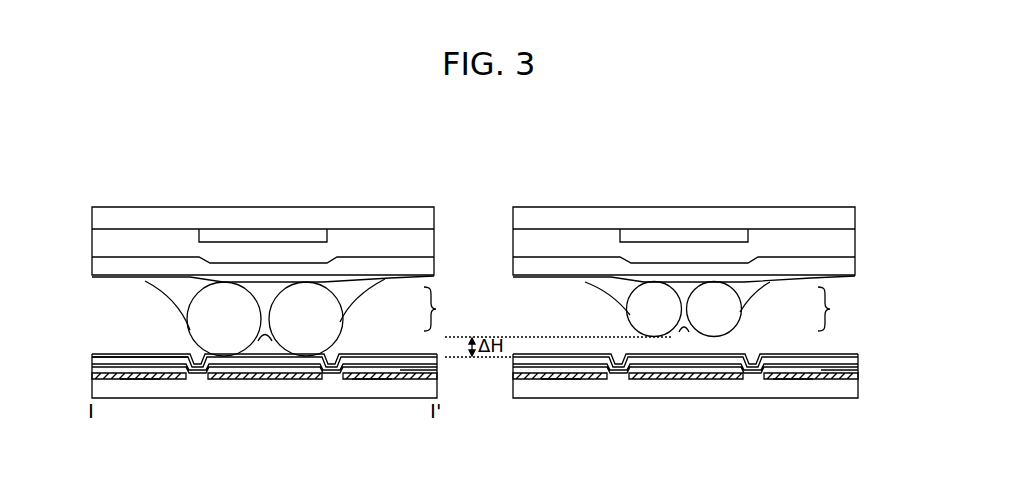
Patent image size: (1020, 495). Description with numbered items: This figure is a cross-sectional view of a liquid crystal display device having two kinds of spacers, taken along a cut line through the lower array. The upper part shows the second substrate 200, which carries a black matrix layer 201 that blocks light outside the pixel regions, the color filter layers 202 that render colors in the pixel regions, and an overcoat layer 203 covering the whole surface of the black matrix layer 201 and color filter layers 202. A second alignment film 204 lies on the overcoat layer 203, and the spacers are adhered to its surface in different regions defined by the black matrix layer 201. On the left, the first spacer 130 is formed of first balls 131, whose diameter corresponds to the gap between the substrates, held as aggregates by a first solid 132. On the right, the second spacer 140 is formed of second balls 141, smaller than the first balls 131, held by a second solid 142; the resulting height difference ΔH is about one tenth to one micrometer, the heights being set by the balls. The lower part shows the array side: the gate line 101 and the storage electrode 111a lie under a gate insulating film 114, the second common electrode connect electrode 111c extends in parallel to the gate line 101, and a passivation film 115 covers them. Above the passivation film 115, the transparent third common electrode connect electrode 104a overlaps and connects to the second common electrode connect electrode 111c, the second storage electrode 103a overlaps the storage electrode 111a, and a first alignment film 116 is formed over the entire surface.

The second substrate 200 is at (434, 216).
The black matrix layer 201 is at (316, 237).
The color filter layers 202 is at (434, 241).
The overcoat layer 203 is at (434, 266).
The second alignment film 204 is at (434, 277).
The first spacer 130 is at (450, 309).
The first balls 131 is at (332, 328).
The first solid 132 is at (350, 292).
The second spacer 140 is at (844, 309).
The second balls 141 is at (720, 327).
The second solid 142 is at (743, 292).
The first alignment film 116 is at (100, 354).
The second storage electrode 103a is at (160, 357).
The third common electrode connect electrode 104a is at (437, 368).
The passivation film 115 is at (437, 383).
The gate line 101 is at (256, 379).
The storage electrode 111a is at (140, 379).
The second common electrode connect electrode 111c is at (372, 379).
The gate insulating film 114 is at (419, 370).